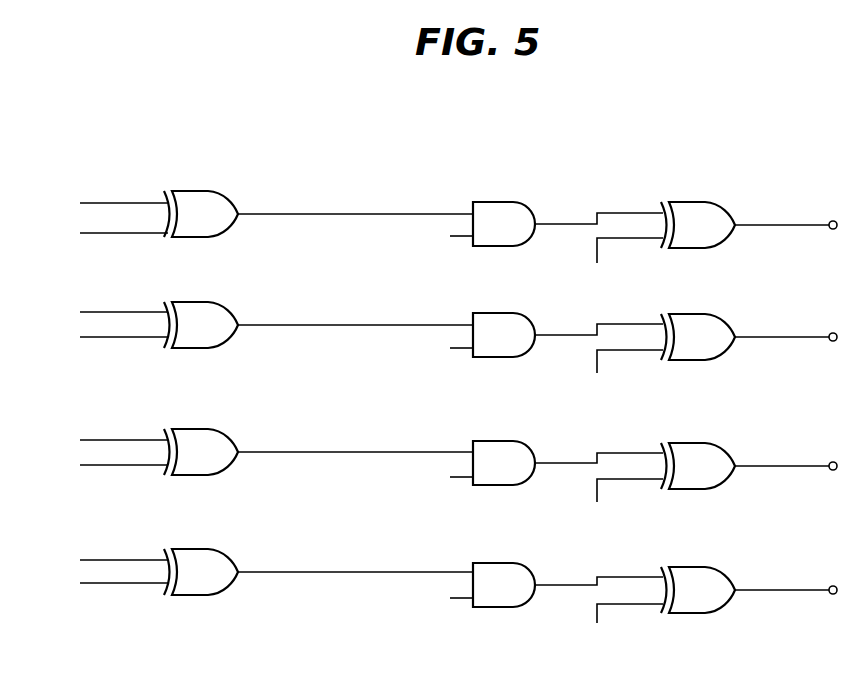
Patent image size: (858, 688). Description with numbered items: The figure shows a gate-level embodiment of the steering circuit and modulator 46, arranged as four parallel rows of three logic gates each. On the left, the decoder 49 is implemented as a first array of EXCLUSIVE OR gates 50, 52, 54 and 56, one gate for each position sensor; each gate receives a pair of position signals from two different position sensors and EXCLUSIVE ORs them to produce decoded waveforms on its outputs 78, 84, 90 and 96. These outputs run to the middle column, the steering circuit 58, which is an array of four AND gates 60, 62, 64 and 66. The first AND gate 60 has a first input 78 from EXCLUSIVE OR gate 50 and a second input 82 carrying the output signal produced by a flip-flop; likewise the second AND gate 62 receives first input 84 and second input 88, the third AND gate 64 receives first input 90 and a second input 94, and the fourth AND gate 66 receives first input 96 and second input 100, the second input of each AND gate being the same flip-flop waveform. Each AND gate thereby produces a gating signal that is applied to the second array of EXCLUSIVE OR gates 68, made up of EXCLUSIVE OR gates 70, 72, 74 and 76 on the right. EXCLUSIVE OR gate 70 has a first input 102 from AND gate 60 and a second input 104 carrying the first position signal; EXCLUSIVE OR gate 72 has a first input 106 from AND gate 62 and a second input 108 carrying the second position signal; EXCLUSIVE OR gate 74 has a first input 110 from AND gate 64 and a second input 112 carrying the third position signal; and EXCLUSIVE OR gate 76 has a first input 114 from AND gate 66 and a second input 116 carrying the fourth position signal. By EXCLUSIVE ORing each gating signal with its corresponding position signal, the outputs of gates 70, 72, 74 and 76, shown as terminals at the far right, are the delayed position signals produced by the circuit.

The steering circuit and modulator 46 is at (418, 146).
The decoder 49 is at (224, 164).
The EXCLUSIVE OR gate 50 is at (232, 197).
The EXCLUSIVE OR gate 52 is at (233, 312).
The EXCLUSIVE OR gate 54 is at (233, 440).
The EXCLUSIVE OR gate 56 is at (233, 562).
The steering circuit 58 is at (502, 176).
The first AND gate 60 is at (521, 206).
The second AND gate 62 is at (521, 318).
The third AND gate 64 is at (521, 445).
The fourth AND gate 66 is at (521, 568).
The second array of EXCLUSIVE OR gates 68 is at (690, 176).
The EXCLUSIVE OR gate 70 is at (720, 205).
The EXCLUSIVE OR gate 72 is at (719, 319).
The EXCLUSIVE OR gate 74 is at (718, 447).
The EXCLUSIVE OR gate 76 is at (718, 571).
The output of EXCLUSIVE OR gate 50 78 is at (432, 212).
The second input of first AND gate 82 is at (455, 238).
The output of EXCLUSIVE OR gate 52 84 is at (362, 324).
The second input of second AND gate 88 is at (455, 350).
The output of EXCLUSIVE OR gate 54 90 is at (362, 451).
The enable input line of AND gate 64 94 is at (459, 479).
The output of EXCLUSIVE OR gate 56 96 is at (362, 571).
The second input of fourth AND gate 100 is at (455, 600).
The first input of EXCLUSIVE OR gate 70 102 is at (583, 212).
The second input of EXCLUSIVE OR gate 70 104 is at (595, 250).
The first input of EXCLUSIVE OR gate 72 106 is at (566, 338).
The second input of EXCLUSIVE OR gate 72 108 is at (599, 369).
The first input of EXCLUSIVE OR gate 74 110 is at (583, 452).
The second input of EXCLUSIVE OR gate 74 112 is at (595, 486).
The first input of EXCLUSIVE OR gate 76 114 is at (583, 576).
The second input of EXCLUSIVE OR gate 76 116 is at (633, 606).